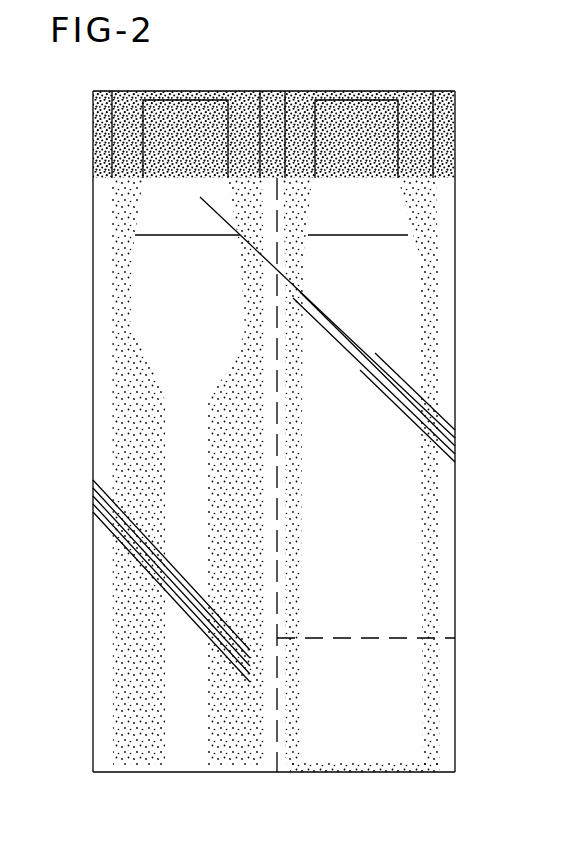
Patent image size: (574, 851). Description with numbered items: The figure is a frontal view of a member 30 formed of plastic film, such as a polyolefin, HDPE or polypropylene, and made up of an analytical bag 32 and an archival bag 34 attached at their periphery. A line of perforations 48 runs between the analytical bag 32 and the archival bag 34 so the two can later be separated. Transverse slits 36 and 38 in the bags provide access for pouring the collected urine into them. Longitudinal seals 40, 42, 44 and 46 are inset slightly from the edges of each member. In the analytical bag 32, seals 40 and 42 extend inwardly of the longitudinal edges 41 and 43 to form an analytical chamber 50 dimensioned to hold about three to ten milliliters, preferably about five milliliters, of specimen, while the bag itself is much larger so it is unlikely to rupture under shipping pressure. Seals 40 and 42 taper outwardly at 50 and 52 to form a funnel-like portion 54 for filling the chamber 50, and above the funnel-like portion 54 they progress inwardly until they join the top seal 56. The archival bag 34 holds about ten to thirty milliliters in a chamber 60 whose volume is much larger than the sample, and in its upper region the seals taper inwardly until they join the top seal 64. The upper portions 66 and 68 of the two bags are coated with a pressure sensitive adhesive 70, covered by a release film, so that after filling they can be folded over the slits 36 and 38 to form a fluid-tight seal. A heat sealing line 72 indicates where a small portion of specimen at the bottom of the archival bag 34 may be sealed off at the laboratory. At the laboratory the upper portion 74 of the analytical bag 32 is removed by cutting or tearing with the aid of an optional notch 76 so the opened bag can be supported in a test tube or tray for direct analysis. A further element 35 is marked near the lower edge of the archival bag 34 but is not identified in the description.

The member 30 is at (478, 212).
The analytical bag 32 is at (108, 212).
The archival bag 34 is at (461, 257).
The bottom wall 35 is at (450, 682).
The transverse slit 36 is at (213, 239).
The transverse slit 38 is at (380, 239).
The longitudinal seal 40 is at (135, 567).
The longitudinal edge 41 is at (93, 478).
The longitudinal seal 42 is at (235, 738).
The longitudinal edge 43 is at (277, 600).
The longitudinal seal 44 is at (285, 542).
The longitudinal seal 46 is at (432, 545).
The line of perforations 48 is at (278, 462).
The analytical chamber 50 is at (145, 372).
The outward taper 52 is at (228, 372).
The funnel-like portion 54 is at (176, 342).
The top seal 56 is at (168, 92).
The chamber 60 is at (387, 482).
The top seal 64 is at (426, 128).
The upper portion 66 is at (240, 92).
The upper portion 68 is at (310, 92).
The pressure sensitive adhesive 70 is at (412, 99).
The heat sealing line 72 is at (395, 636).
The upper portion 74 is at (105, 272).
The notch 76 is at (103, 305).